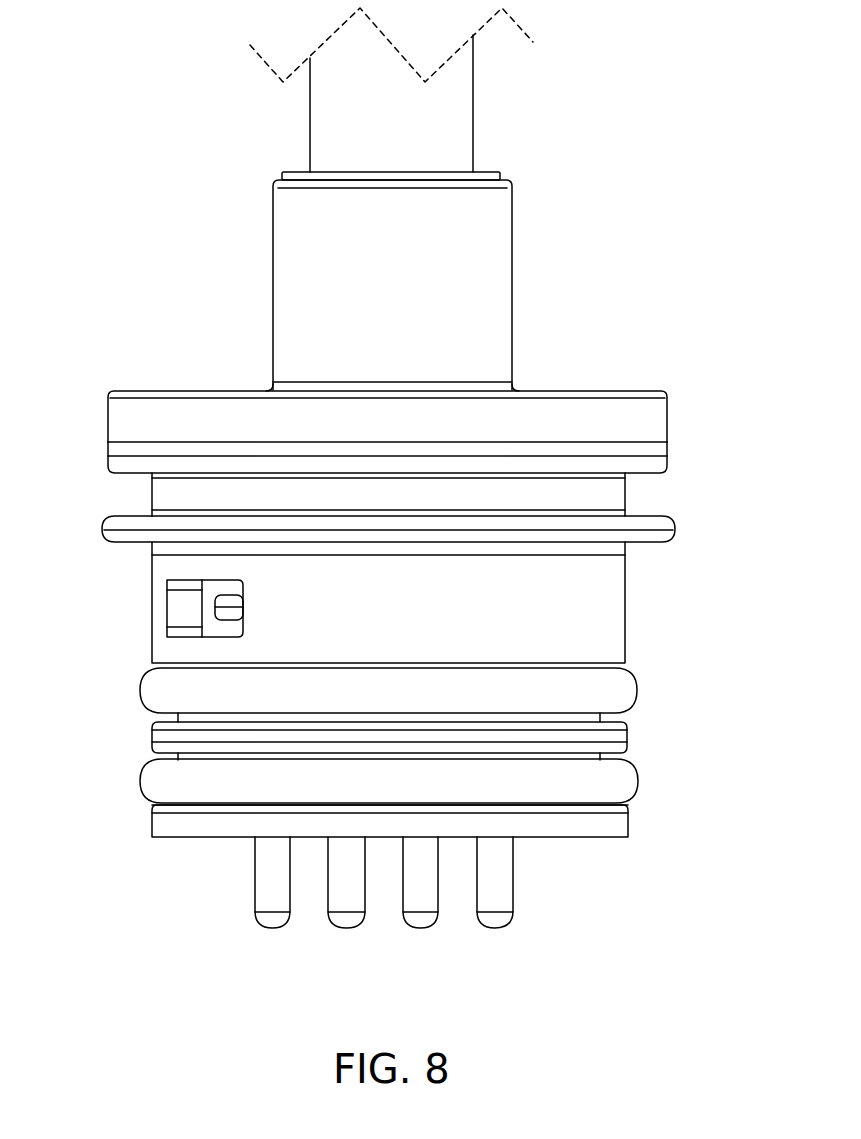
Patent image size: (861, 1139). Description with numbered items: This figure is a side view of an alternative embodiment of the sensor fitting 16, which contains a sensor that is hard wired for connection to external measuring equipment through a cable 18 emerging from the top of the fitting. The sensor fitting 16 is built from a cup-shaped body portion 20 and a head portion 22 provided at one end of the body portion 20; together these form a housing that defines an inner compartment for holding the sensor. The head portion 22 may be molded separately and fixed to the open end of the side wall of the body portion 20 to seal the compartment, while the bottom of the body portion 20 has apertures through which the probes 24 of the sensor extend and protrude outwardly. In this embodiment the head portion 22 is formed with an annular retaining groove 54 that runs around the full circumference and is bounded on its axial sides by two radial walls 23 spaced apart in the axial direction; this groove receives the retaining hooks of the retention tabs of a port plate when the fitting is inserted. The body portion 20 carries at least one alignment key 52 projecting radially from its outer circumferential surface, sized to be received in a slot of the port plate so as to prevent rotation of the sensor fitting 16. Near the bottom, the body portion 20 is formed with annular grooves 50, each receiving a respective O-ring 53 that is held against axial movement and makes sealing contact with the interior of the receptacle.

The sensor fitting 16 is at (107, 417).
The cable 18 is at (453, 120).
The body portion 20 is at (148, 840).
The head portion 22 is at (670, 418).
The radial walls 23 is at (108, 458).
The probes 24 is at (442, 898).
The annular grooves 50 is at (622, 804).
The alignment key 52 is at (180, 606).
The O-rings 53 is at (643, 778).
The annular retaining groove 54 is at (625, 498).